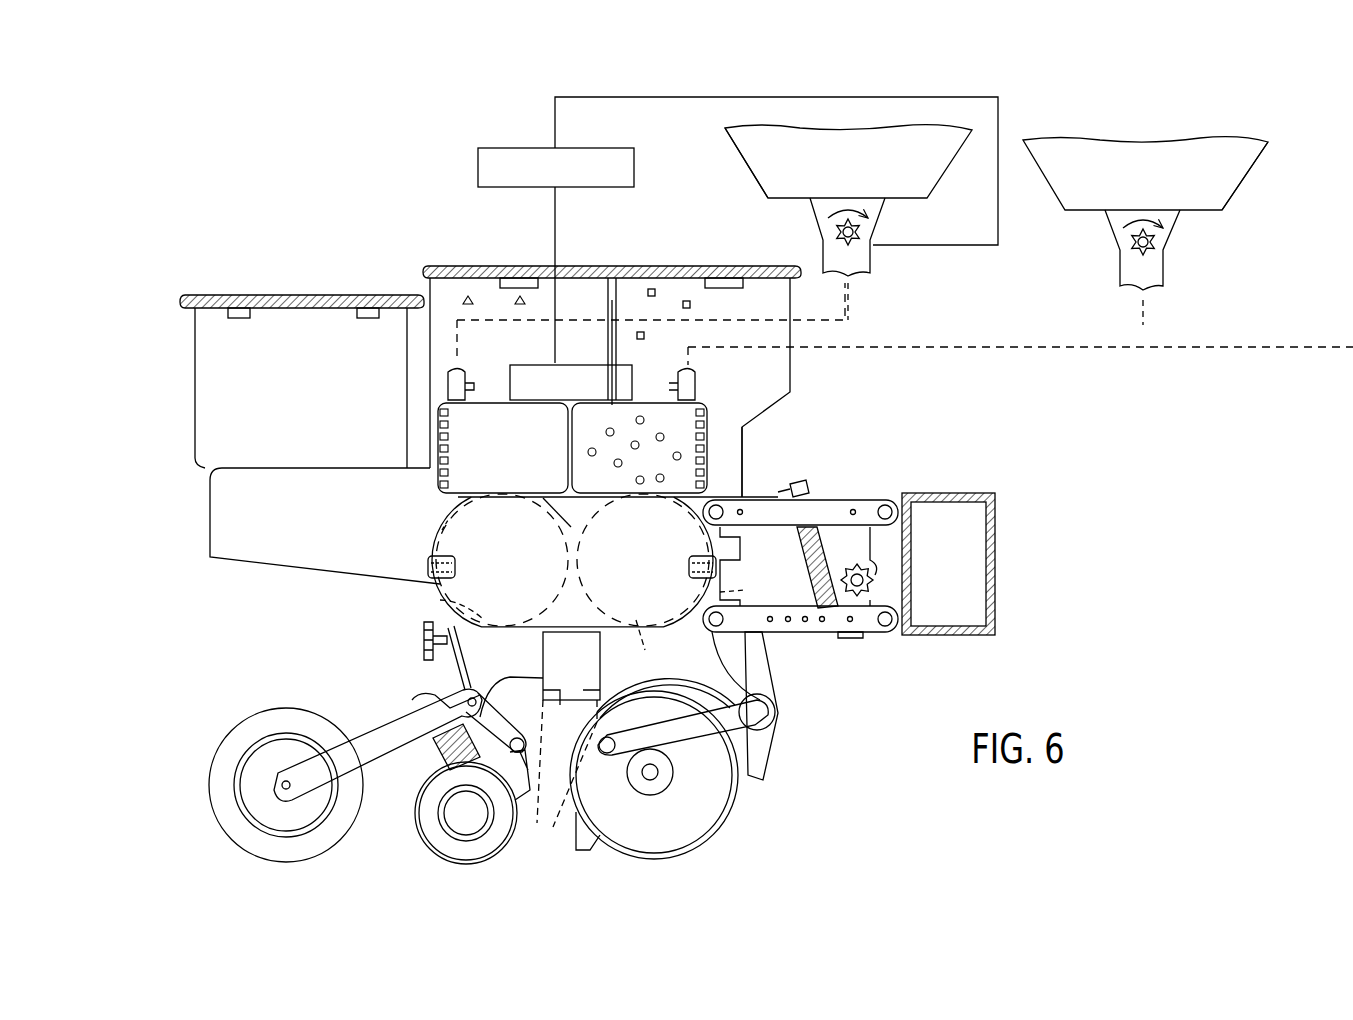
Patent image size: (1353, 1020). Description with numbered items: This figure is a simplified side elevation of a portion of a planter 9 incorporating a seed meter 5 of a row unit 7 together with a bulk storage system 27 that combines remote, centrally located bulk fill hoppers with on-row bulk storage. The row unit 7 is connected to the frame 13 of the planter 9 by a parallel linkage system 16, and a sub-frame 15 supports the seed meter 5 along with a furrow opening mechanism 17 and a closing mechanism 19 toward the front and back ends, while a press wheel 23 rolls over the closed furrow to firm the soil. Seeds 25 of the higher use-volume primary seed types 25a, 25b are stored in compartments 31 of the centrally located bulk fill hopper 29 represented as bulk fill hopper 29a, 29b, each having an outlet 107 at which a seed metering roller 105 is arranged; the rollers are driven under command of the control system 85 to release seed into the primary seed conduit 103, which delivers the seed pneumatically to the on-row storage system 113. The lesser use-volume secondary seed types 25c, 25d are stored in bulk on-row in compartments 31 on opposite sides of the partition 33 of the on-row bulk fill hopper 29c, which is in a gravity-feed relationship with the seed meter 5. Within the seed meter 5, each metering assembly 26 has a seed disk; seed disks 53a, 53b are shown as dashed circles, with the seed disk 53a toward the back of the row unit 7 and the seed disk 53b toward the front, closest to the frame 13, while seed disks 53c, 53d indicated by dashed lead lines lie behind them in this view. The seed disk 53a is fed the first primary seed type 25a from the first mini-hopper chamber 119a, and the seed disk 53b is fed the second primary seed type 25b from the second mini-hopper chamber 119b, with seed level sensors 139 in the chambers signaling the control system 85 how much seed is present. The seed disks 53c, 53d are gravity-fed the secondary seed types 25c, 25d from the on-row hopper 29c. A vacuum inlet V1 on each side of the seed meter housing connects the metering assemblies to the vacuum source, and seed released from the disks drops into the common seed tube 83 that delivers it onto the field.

The seed meter 5 is at (612, 636).
The row unit 7 is at (180, 578).
The planter 9 is at (1052, 608).
The frame 13 is at (930, 500).
The sub-frame 15 is at (742, 488).
The parallel linkage system 16 is at (835, 503).
The furrow opening mechanism 17 is at (722, 832).
The closing mechanism 19 is at (415, 840).
The press wheel 23 is at (215, 815).
The seeds 25 is at (772, 148).
The first primary seed type 25a is at (900, 160).
The second primary seed type 25b is at (1160, 160).
The secondary seed type 25c is at (516, 338).
The secondary seed type 25d is at (692, 305).
The metering assembly 26 is at (500, 604).
The bulk storage system 27 is at (1190, 125).
The bulk fill hopper 29 is at (440, 250).
The bulk fill hopper 29a is at (745, 168).
The bulk fill hopper 29b is at (1237, 198).
The on-row bulk fill hopper 29c is at (420, 288).
The compartment 31 is at (770, 190).
The partition 33 is at (620, 292).
The seed disk 53a is at (440, 600).
The seed disk 53b is at (722, 592).
The seed disk 53c is at (440, 522).
The seed disk 53d is at (640, 628).
The seed tube 83 is at (562, 662).
The control system 85 is at (478, 170).
The primary seed conduit 103 is at (875, 263).
The seed metering roller 105 is at (838, 232).
The outlet 107 is at (880, 220).
The on-row storage system 113 is at (420, 463).
The first mini-hopper chamber 119a is at (520, 492).
The second mini-hopper chamber 119b is at (620, 492).
The seed level sensor 139 is at (440, 460).
The vacuum inlet V1 is at (432, 560).